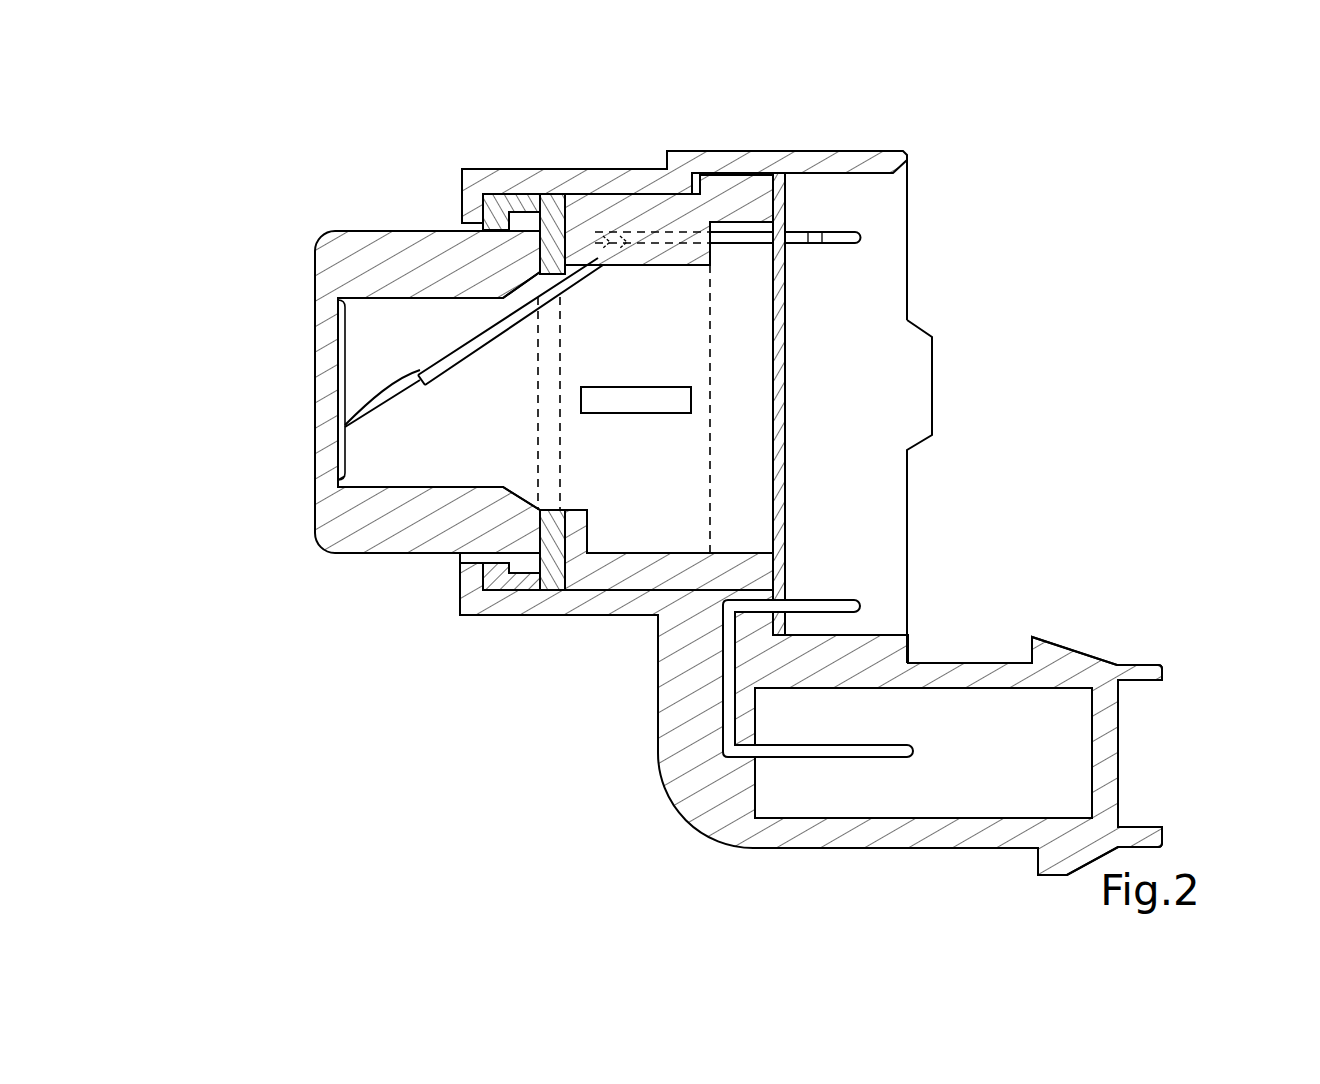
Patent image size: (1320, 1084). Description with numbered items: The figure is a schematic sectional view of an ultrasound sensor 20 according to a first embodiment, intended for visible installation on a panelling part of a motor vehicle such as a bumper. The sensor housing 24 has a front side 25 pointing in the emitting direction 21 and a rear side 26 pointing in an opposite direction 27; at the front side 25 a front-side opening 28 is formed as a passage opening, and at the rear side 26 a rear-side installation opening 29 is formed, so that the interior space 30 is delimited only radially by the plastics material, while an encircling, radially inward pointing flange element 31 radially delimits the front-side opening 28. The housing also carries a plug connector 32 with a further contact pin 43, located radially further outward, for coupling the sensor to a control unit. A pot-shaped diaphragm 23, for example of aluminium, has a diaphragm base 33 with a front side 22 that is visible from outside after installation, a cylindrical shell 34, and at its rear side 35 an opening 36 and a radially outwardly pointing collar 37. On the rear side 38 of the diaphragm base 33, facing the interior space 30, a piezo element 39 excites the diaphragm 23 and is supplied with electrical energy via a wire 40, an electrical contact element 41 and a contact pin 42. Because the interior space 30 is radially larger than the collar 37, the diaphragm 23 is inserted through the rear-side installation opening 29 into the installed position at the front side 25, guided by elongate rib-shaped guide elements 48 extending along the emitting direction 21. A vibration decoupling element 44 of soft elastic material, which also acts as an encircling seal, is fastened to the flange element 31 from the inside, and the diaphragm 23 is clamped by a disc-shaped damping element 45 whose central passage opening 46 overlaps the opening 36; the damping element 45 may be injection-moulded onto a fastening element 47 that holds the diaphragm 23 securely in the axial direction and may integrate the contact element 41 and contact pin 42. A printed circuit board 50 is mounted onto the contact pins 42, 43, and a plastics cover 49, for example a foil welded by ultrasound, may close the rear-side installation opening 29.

The ultrasound sensor 20 is at (1050, 190).
The emitting direction 21 is at (150, 398).
The front side 22 is at (313, 450).
The diaphragm 23 is at (338, 552).
The sensor housing 24 is at (590, 180).
The front side 25 is at (462, 622).
The rear side 26 is at (910, 150).
The opposite direction 27 is at (1075, 275).
The rear-side installation opening 29 is at (878, 337).
The front-side opening 28 is at (460, 570).
The interior space 30 is at (664, 468).
The flange element 31 is at (470, 200).
The plug connector 32 is at (1167, 650).
The diaphragm base 33 is at (327, 300).
The shell 34 is at (414, 287).
The rear side 35 is at (537, 380).
The opening 36 is at (540, 510).
The collar 37 is at (528, 216).
The rear side 38 is at (348, 476).
The piezo element 39 is at (342, 350).
The wire 40 is at (392, 390).
The electrical contact element 41 is at (500, 328).
The contact pin 42 is at (818, 240).
The further contact pin 43 is at (835, 603).
The vibration decoupling element 44 is at (493, 196).
The damping element 45 is at (548, 590).
The central passage opening 46 is at (560, 510).
The fastening element 47 is at (622, 565).
The guide elements 48 is at (623, 383).
The plastics cover 49 is at (932, 393).
The printed circuit board 50 is at (790, 383).